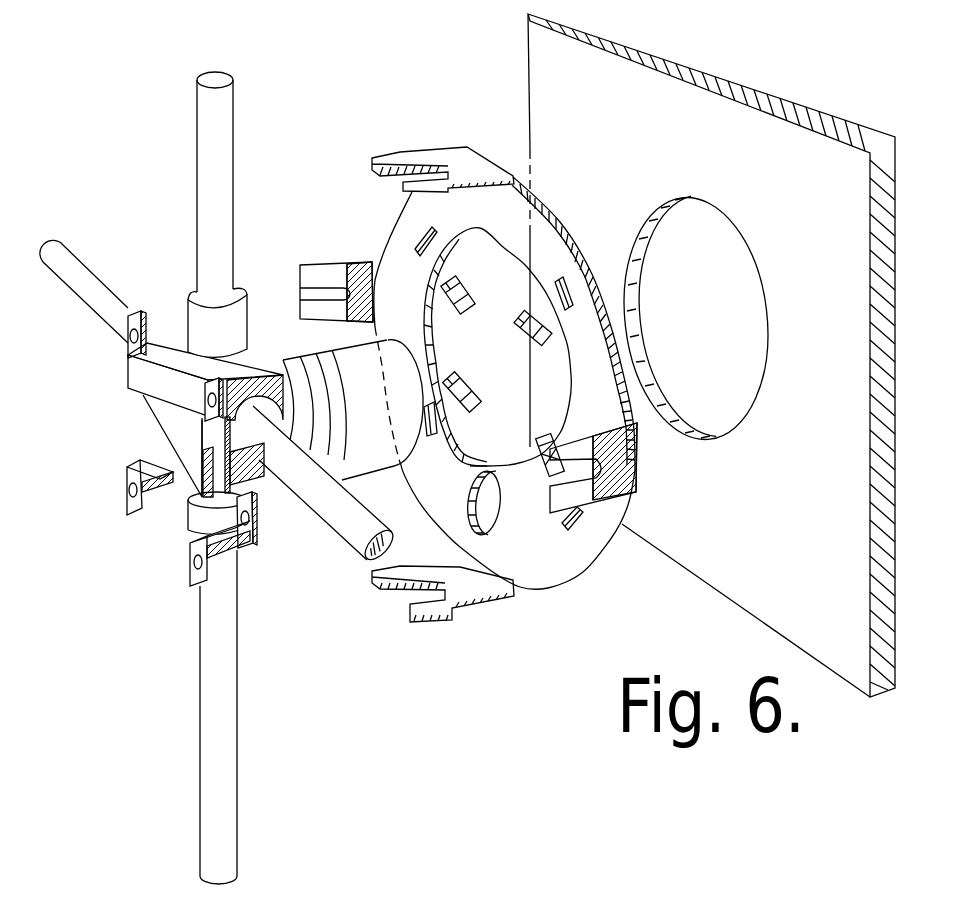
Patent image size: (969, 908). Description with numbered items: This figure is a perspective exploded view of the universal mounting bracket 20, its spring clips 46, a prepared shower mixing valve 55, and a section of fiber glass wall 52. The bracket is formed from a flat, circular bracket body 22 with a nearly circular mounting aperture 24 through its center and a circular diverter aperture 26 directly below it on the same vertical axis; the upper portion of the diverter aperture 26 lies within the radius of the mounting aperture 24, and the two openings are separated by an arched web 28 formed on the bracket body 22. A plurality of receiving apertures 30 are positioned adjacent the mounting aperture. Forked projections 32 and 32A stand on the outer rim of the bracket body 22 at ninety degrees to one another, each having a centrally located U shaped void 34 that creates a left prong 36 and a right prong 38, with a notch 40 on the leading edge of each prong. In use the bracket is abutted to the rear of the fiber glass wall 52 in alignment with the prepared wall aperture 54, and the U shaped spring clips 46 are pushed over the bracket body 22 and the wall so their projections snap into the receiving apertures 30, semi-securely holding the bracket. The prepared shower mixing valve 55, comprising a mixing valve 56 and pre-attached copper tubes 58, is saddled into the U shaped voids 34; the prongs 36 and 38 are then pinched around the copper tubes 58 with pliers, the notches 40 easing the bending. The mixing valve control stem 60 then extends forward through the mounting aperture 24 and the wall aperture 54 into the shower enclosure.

The universal mounting bracket 20 is at (578, 189).
The bracket body 22 is at (535, 222).
The mounting aperture 24 is at (507, 283).
The diverter aperture 26 is at (487, 520).
The arched web 28 is at (482, 465).
The receiving apertures 30 is at (418, 240).
The forked projection 32 is at (473, 167).
The forked projection 32A is at (487, 587).
The U shaped void 34 is at (380, 178).
The left prong 36 is at (378, 157).
The right prong 38 is at (415, 187).
The notch 40 is at (403, 157).
The spring clip 46 is at (460, 277).
The fiber glass wall 52 is at (783, 147).
The wall aperture 54 is at (720, 297).
The prepared shower mixing valve 55 is at (165, 265).
The mixing valve 56 is at (160, 438).
The copper tubes 58 is at (230, 113).
The mixing valve control stem 60 is at (353, 440).